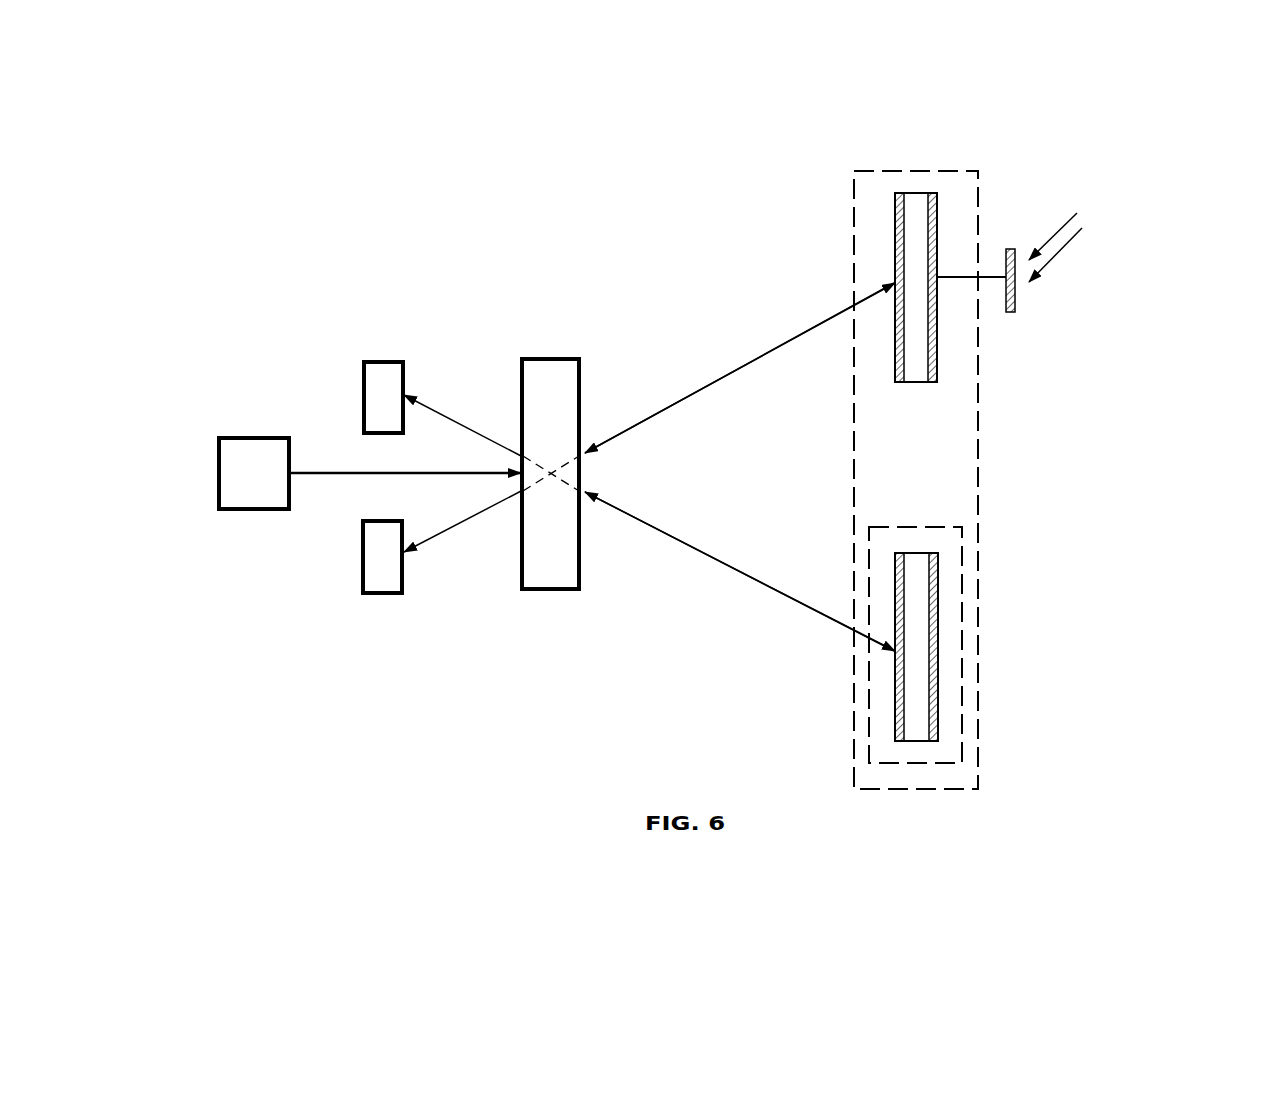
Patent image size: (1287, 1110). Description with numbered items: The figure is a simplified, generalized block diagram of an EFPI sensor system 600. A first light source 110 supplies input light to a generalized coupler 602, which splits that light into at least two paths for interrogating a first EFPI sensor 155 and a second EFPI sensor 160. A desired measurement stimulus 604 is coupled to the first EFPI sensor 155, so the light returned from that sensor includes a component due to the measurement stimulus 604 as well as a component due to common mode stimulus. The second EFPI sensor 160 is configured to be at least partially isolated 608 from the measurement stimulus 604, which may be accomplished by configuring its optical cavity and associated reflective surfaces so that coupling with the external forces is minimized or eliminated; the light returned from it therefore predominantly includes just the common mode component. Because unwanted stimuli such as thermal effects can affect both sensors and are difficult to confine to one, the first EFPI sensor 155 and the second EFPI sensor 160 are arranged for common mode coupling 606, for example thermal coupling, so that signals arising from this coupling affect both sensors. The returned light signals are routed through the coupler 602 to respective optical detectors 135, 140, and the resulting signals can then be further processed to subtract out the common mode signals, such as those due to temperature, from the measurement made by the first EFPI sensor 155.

The EFPI sensor system 600 is at (634, 157).
The first light source 110 is at (219, 439).
The optical detector 140 is at (364, 406).
The optical detector 135 is at (363, 538).
The coupler 602 is at (550, 359).
The first EFPI sensor 155 is at (895, 238).
The measurement stimulus 604 is at (1062, 230).
The common mode coupling 606 is at (978, 462).
The second EFPI sensor 160 is at (895, 598).
The isolation from measurement stimulus 608 is at (962, 652).